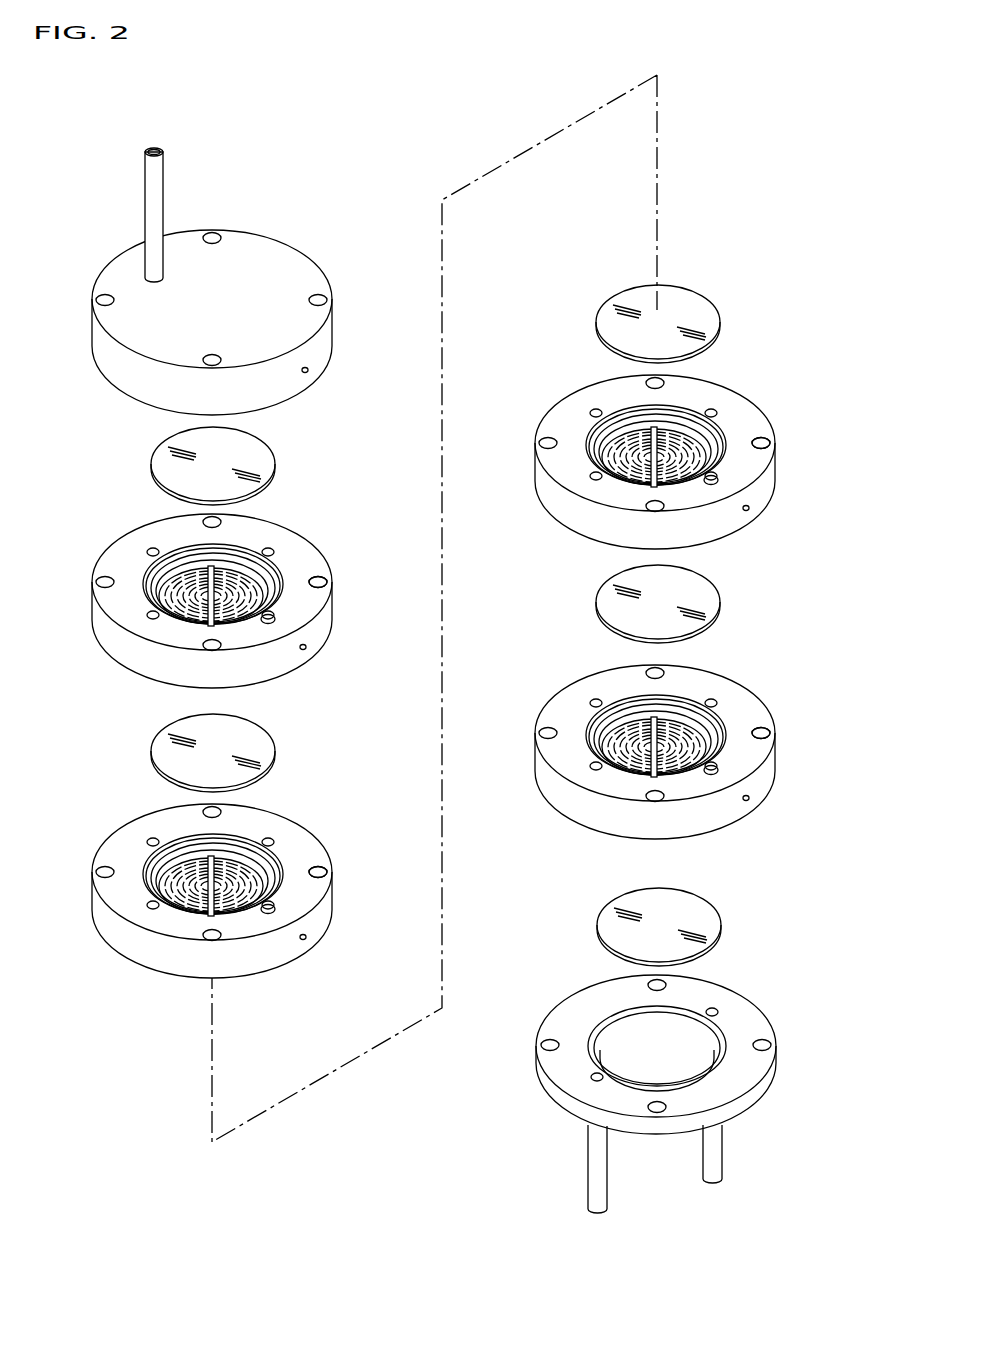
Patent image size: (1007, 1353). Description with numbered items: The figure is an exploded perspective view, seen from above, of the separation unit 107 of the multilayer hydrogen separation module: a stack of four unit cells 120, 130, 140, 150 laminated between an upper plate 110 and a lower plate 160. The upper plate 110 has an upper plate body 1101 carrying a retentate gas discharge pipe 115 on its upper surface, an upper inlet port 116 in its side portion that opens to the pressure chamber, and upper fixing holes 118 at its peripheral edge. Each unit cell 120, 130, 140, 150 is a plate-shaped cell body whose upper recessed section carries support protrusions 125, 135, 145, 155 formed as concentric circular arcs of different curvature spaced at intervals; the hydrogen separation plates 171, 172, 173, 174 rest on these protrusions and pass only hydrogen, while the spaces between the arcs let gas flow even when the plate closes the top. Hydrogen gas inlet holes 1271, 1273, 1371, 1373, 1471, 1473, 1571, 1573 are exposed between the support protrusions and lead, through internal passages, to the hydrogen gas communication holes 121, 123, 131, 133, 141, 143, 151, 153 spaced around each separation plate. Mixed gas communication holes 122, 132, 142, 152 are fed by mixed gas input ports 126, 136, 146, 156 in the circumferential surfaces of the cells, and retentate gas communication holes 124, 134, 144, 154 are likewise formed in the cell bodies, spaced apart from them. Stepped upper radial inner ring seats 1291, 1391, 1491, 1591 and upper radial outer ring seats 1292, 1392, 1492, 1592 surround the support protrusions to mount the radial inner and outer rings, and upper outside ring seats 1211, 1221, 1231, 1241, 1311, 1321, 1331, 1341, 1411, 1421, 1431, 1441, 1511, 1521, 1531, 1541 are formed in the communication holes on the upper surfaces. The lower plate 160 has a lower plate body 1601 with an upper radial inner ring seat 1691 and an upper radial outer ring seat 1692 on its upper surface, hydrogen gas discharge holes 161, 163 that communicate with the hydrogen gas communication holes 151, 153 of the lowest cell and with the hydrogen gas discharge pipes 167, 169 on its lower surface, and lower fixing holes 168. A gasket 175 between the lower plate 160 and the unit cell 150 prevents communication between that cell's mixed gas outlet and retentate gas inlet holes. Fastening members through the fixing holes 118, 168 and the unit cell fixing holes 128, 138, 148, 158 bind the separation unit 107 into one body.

The separation unit 107 is at (302, 151).
The upper plate 110 is at (314, 256).
The upper plate body 1101 is at (237, 240).
The retentate gas discharge pipe 115 is at (148, 170).
The upper inlet port 116 is at (308, 371).
The upper fixing hole 118 is at (327, 300).
The hydrogen separation plate 171 is at (277, 458).
The hydrogen separation plate 172 is at (157, 745).
The hydrogen separation plate 173 is at (692, 292).
The hydrogen separation plate 174 is at (718, 593).
The gasket 175 is at (714, 912).
The unit cell 120 is at (337, 610).
The hydrogen gas communication hole 121 is at (215, 549).
The upper outside ring seat 1211 is at (273, 549).
The upper outside ring seat 1221 is at (270, 620).
The upper outside ring seat 1231 is at (148, 614).
The upper outside ring seat 1241 is at (148, 550).
The mixed gas communication hole 122 is at (306, 648).
The hydrogen gas communication hole 123 is at (156, 622).
The retentate gas communication hole 124 is at (150, 574).
The support protrusion 125 is at (158, 602).
The mixed gas input port 126 is at (274, 620).
The unit cell fixing hole 128 is at (326, 583).
The hydrogen gas inlet hole 1271 is at (248, 584).
The hydrogen gas inlet hole 1273 is at (182, 622).
The upper radial inner ring seat 1291 is at (185, 562).
The upper radial outer ring seat 1292 is at (218, 547).
The unit cell 130 is at (337, 900).
The hydrogen gas communication hole 131 is at (215, 839).
The upper outside ring seat 1311 is at (273, 839).
The upper outside ring seat 1321 is at (270, 910).
The upper outside ring seat 1331 is at (148, 904).
The upper outside ring seat 1341 is at (148, 840).
The mixed gas communication hole 132 is at (306, 938).
The hydrogen gas communication hole 133 is at (156, 912).
The retentate gas communication hole 134 is at (150, 864).
The support protrusion 135 is at (158, 892).
The mixed gas input port 136 is at (274, 910).
The unit cell fixing hole 138 is at (326, 873).
The hydrogen gas inlet hole 1371 is at (248, 874).
The hydrogen gas inlet hole 1373 is at (182, 912).
The upper radial inner ring seat 1391 is at (185, 852).
The upper radial outer ring seat 1392 is at (218, 837).
The unit cell 140 is at (780, 468).
The hydrogen gas communication hole 141 is at (660, 410).
The upper outside ring seat 1411 is at (716, 410).
The upper outside ring seat 1421 is at (713, 480).
The upper outside ring seat 1431 is at (591, 473).
The upper outside ring seat 1441 is at (591, 412).
The mixed gas communication hole 142 is at (749, 508).
The hydrogen gas communication hole 143 is at (598, 482).
The retentate gas communication hole 144 is at (593, 433).
The support protrusion 145 is at (600, 462).
The mixed gas input port 146 is at (717, 481).
The unit cell fixing hole 148 is at (769, 444).
The hydrogen gas inlet hole 1471 is at (696, 443).
The hydrogen gas inlet hole 1473 is at (627, 480).
The upper radial inner ring seat 1491 is at (628, 420).
The upper radial outer ring seat 1492 is at (663, 407).
The unit cell 150 is at (780, 758).
The hydrogen gas communication hole 151 is at (660, 700).
The upper outside ring seat 1511 is at (716, 700).
The upper outside ring seat 1521 is at (713, 770).
The upper outside ring seat 1531 is at (591, 763).
The upper outside ring seat 1541 is at (591, 702).
The mixed gas communication hole 152 is at (749, 798).
The hydrogen gas communication hole 153 is at (598, 772).
The retentate gas communication hole 154 is at (593, 723).
The support protrusion 155 is at (600, 752).
The mixed gas input port 156 is at (717, 771).
The unit cell fixing hole 158 is at (769, 734).
The hydrogen gas inlet hole 1571 is at (696, 733).
The hydrogen gas inlet hole 1573 is at (627, 770).
The upper radial inner ring seat 1591 is at (628, 710).
The upper radial outer ring seat 1592 is at (663, 697).
The lower plate 160 is at (785, 1058).
The lower plate body 1601 is at (767, 1087).
The hydrogen gas discharge hole 161 is at (718, 1010).
The hydrogen gas discharge hole 163 is at (597, 1082).
The hydrogen gas discharge pipe 167 is at (717, 1152).
The lower fixing hole 168 is at (771, 1045).
The hydrogen gas discharge pipe 169 is at (602, 1202).
The upper radial inner ring seat 1691 is at (600, 1050).
The upper radial outer ring seat 1692 is at (598, 1027).